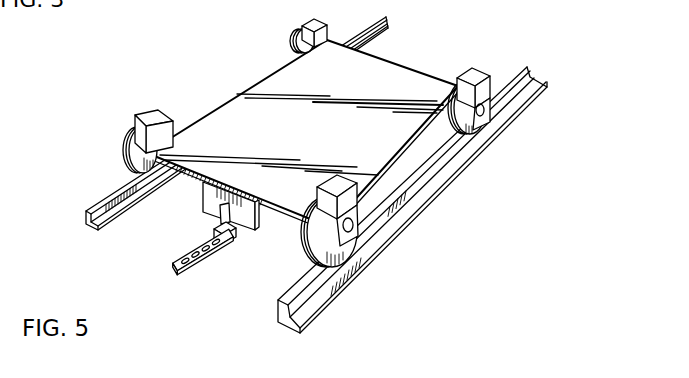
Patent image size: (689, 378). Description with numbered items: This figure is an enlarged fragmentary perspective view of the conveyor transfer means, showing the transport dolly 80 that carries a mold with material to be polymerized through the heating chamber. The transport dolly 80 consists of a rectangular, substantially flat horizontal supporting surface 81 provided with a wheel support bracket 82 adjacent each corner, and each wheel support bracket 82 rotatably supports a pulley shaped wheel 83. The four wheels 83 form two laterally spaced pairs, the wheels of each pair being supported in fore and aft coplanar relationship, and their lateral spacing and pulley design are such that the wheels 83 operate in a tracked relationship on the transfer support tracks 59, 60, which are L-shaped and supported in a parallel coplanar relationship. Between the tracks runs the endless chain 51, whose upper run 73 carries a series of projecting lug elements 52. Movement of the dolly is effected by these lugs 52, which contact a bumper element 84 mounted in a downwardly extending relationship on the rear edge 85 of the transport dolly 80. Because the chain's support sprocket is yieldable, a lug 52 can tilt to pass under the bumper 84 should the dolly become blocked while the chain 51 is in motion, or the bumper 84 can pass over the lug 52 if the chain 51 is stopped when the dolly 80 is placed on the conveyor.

The endless chain 51 is at (196, 239).
The lug element 52 is at (236, 225).
The transfer track element 59 is at (110, 212).
The transfer track element 60 is at (315, 310).
The upper run 73 is at (204, 254).
The transport dolly 80 is at (272, 83).
The supporting surface 81 is at (344, 138).
The wheel support bracket 82 is at (158, 114).
The pulley shaped wheel 83 is at (140, 166).
The bumper element 84 is at (210, 202).
The rear edge 85 is at (182, 158).